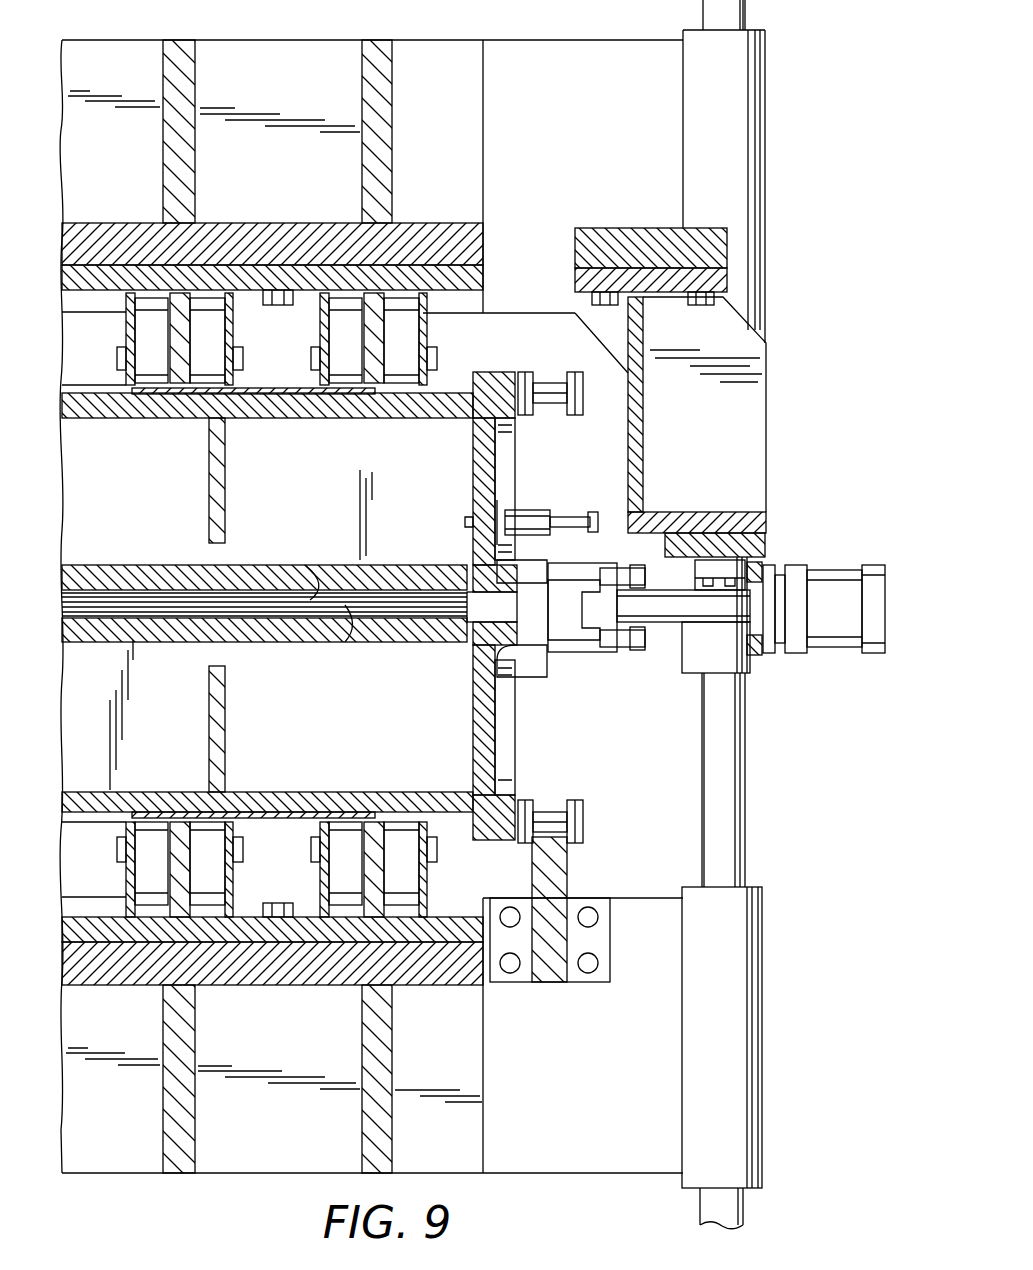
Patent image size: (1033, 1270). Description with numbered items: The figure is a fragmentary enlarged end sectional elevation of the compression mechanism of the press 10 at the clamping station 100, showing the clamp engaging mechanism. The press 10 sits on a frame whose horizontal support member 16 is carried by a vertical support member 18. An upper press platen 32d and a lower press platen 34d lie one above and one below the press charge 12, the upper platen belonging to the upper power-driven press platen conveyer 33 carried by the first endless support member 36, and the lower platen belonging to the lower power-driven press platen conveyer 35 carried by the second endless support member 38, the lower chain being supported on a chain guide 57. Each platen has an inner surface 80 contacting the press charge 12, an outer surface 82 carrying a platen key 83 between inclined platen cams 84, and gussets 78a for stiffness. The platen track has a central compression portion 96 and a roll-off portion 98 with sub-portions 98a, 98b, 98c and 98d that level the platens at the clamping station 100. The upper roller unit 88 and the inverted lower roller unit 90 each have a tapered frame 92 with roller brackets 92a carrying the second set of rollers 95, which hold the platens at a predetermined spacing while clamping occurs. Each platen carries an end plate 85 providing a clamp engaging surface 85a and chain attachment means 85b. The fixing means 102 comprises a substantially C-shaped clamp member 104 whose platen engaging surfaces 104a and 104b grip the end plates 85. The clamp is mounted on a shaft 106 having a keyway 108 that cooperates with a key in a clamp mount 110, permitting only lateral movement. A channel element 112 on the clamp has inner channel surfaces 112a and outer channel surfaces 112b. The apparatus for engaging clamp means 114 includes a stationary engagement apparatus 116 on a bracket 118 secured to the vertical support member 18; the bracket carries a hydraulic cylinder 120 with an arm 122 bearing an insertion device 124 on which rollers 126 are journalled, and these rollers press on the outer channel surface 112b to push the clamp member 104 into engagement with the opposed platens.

The press 10 is at (567, 152).
The press charge 12 is at (218, 624).
The horizontal support member 16 is at (767, 121).
The vertical support member 18 is at (747, 805).
The upper press platen 32d is at (292, 518).
The upper power-driven press platen conveyer 33 is at (532, 356).
The lower press platen 34d is at (292, 718).
The lower power-driven press platen conveyer 35 is at (622, 800).
The first endless support member 36 is at (562, 410).
The second endless support member 38 is at (545, 808).
The chain guide 57 is at (572, 851).
The gusset 78a is at (209, 478).
The inner surface 80 is at (312, 568).
The outer surface 82 is at (440, 392).
The platen key 83 is at (90, 385).
The inclined platen cam 84 is at (268, 414).
The end plate 85 is at (472, 466).
The clamp engaging surface 85a is at (493, 520).
The chain attachment means 85b is at (585, 393).
The upper roller unit 88 is at (516, 298).
The lower roller unit 90 is at (497, 992).
The tapered frame 92 is at (465, 290).
The roller bracket 92a is at (440, 318).
The second set of rollers 95 is at (155, 320).
The compression portion 96 is at (290, 392).
The roll-off portion 98 is at (320, 388).
The roll-off sub-portion 98a is at (365, 385).
The roll-off sub-portion 98b is at (190, 385).
The roll-off sub-portion 98c is at (320, 385).
The roll-off sub-portion 98d is at (130, 385).
The clamping station 100 is at (690, 728).
The fixing means 102 is at (612, 728).
The clamp member 104 is at (490, 660).
The platen engaging surface 104a is at (472, 580).
The platen engaging surface 104b is at (540, 680).
The shaft 106 is at (566, 520).
The keyway 108 is at (497, 520).
The clamp mount 110 is at (540, 512).
The channel element 112 is at (598, 660).
The inner channel surface 112a is at (574, 610).
The outer channel surface 112b is at (630, 568).
The apparatus for engaging clamp means 114 is at (802, 692).
The stationary engagement apparatus 116 is at (772, 563).
The bracket 118 is at (733, 512).
The hydraulic cylinder 120 is at (800, 655).
The arm 122 is at (744, 640).
The insertion device 124 is at (690, 635).
The rollers 126 is at (648, 622).